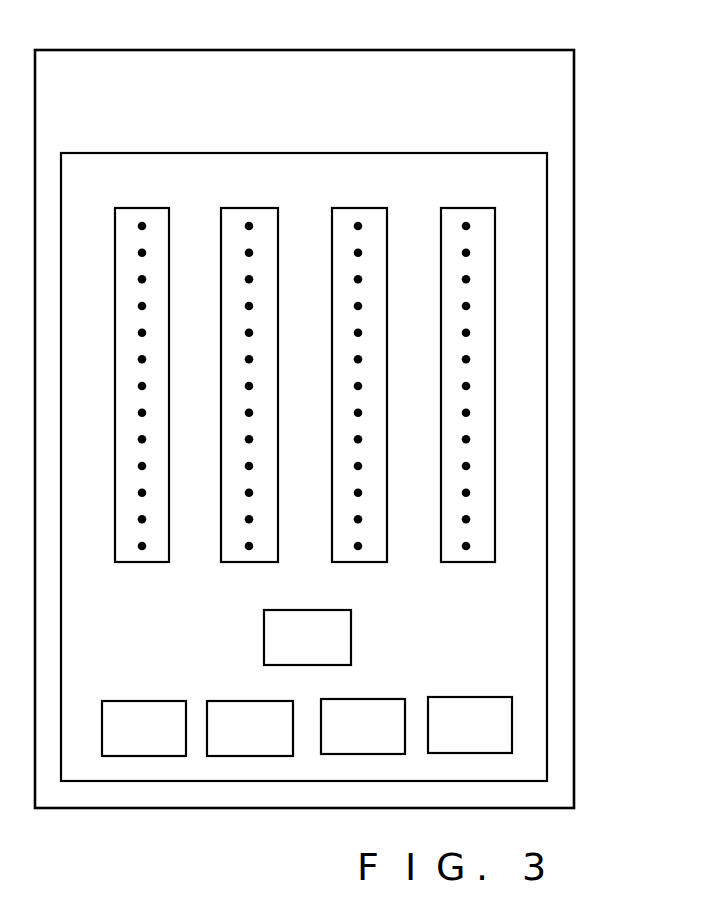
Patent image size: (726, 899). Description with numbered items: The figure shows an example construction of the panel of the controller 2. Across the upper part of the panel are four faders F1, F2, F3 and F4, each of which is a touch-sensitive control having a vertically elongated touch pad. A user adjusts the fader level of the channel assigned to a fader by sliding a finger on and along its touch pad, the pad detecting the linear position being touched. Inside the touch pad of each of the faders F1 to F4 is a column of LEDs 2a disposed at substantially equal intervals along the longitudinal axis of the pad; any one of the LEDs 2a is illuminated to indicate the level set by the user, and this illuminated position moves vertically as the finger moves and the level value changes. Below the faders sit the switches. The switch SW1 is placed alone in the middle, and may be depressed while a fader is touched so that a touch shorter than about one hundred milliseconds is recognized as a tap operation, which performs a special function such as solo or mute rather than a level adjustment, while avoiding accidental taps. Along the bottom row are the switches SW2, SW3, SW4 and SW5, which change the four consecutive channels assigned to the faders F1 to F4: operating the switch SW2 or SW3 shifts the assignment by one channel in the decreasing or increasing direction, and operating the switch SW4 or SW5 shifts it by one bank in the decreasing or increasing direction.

The controller 2 is at (392, 48).
The LEDs 2a is at (279, 342).
The fader F1 is at (142, 208).
The fader F2 is at (249, 208).
The fader F3 is at (357, 208).
The fader F4 is at (465, 208).
The switch SW1 is at (307, 637).
The switch SW2 is at (144, 728).
The switch SW3 is at (250, 728).
The switch SW4 is at (363, 726).
The switch SW5 is at (470, 725).